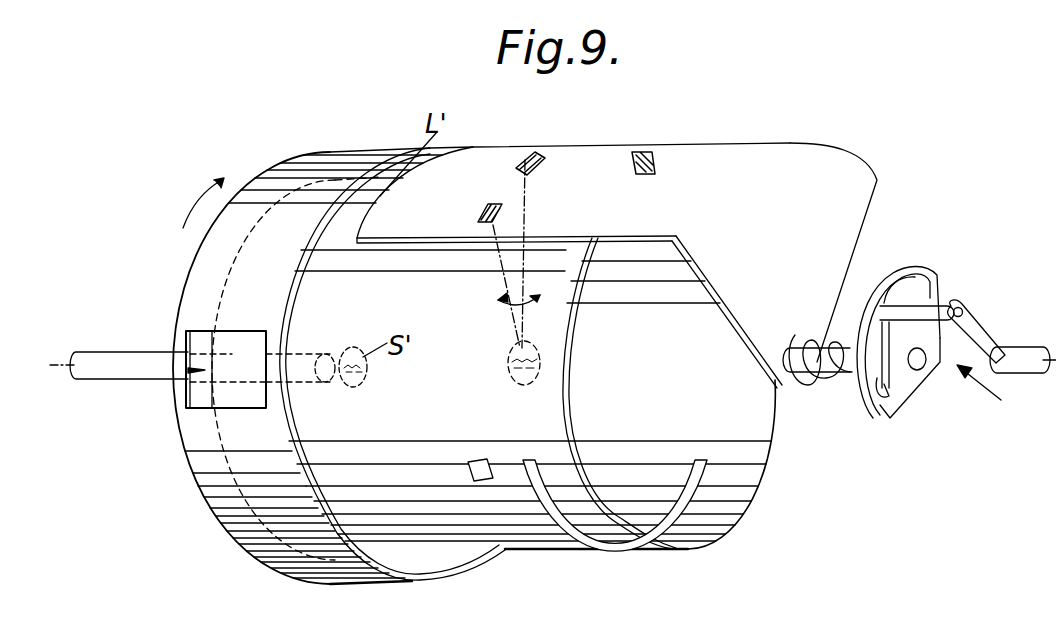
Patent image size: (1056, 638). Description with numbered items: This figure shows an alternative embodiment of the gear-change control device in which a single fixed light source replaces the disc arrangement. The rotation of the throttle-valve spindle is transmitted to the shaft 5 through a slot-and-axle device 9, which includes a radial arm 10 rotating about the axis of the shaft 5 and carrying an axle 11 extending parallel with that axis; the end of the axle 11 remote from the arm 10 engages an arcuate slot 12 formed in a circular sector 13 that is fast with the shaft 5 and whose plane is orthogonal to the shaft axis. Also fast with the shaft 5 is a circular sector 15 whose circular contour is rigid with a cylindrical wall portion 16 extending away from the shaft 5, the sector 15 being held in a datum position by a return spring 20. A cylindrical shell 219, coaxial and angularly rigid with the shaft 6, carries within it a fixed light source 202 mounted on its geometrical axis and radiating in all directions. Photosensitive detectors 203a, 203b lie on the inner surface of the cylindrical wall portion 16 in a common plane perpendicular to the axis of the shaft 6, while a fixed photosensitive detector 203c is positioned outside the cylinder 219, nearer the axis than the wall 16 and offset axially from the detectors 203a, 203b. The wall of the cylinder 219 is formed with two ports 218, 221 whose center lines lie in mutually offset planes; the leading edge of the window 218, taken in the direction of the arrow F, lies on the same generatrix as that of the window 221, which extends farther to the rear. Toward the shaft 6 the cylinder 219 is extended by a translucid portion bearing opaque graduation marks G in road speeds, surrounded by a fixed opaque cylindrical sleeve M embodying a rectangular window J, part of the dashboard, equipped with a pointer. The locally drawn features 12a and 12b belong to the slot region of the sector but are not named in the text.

The shaft 5 is at (833, 366).
The shaft 6 is at (116, 373).
The slot-and-axle device 9 is at (979, 393).
The radial arm 10 is at (975, 334).
The axle 11 is at (921, 310).
The arcuate slot 12 is at (870, 388).
The bracket tongue 12a is at (890, 388).
The bracket bend 12b is at (910, 279).
The circular sector 13 is at (913, 385).
The circular sector 15 is at (852, 210).
The cylindrical wall portion 16 is at (729, 157).
The return spring 20 is at (808, 338).
The fixed light source 202 is at (542, 360).
The photosensitive detector 203a is at (540, 143).
The photosensitive detector 203b is at (478, 215).
The fixed photosensitive detector 203c is at (656, 143).
The port 218 is at (481, 481).
The cylindrical shell 219 is at (405, 535).
The port 221 is at (615, 522).
The fixed opaque cylindrical sleeve M is at (197, 292).
The arrow F is at (198, 202).
The rectangular window J is at (205, 395).
The graduation marks G is at (250, 450).